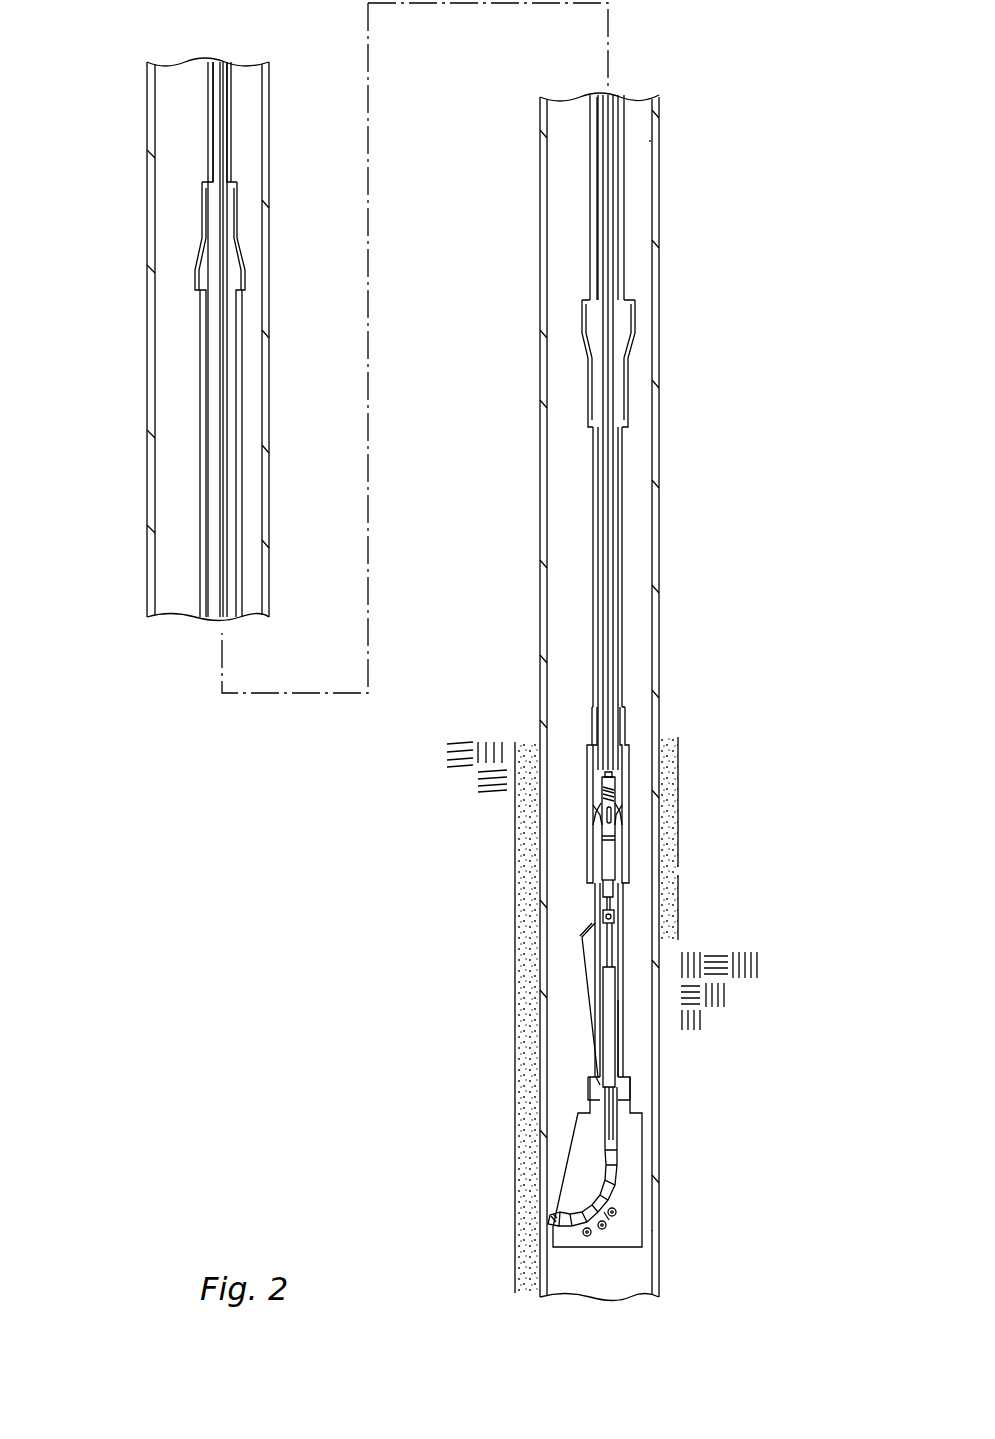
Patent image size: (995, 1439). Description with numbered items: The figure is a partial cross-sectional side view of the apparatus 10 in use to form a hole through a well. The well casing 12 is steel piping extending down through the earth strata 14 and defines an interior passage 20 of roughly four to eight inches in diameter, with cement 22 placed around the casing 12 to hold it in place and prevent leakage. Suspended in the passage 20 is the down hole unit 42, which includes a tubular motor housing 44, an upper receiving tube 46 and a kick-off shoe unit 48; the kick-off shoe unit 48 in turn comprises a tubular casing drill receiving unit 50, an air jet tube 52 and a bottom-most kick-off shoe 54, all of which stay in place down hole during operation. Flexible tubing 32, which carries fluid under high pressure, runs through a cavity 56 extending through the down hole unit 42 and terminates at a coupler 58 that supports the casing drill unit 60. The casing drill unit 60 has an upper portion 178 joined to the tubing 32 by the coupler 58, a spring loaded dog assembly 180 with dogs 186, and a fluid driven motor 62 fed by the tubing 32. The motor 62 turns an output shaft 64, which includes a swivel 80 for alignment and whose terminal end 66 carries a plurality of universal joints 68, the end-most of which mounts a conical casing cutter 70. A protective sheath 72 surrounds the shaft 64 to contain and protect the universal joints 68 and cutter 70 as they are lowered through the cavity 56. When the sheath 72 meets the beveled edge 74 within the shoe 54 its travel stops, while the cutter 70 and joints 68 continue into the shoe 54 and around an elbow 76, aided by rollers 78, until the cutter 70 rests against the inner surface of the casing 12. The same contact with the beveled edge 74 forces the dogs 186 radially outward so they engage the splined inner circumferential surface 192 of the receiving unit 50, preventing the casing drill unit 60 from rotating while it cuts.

The apparatus 10 is at (756, 1233).
The well casing 12 is at (662, 486).
The earth strata 14 is at (745, 943).
The interior passage 20 is at (640, 150).
The cement 22 is at (670, 753).
The flexible tubing 32 is at (230, 78).
The down hole unit 42 is at (198, 344).
The tubular motor housing 44 is at (623, 235).
The upper receiving tube 46 is at (637, 325).
The kick-off shoe unit 48 is at (626, 722).
The tubular casing drill receiving unit 50 is at (616, 850).
The air jet tube 52 is at (595, 897).
The kick-off shoe 54 is at (573, 1118).
The cavity 56 is at (218, 66).
The coupler 58 is at (478, 762).
The casing drill unit 60 is at (620, 778).
The fluid driven motor 62 is at (600, 843).
The output shaft 64 is at (604, 958).
The terminal end 66 is at (605, 1140).
The universal joints 68 is at (580, 1192).
The casing cutter 70 is at (550, 1228).
The protective sheath 72 is at (621, 1050).
The beveled edge 74 is at (598, 1082).
The elbow 76 is at (606, 1222).
The rollers 78 is at (615, 1215).
The swivel 80 is at (615, 917).
The upper portion 178 is at (597, 785).
The spring loaded dog assembly 180 is at (622, 826).
The dogs 186 is at (597, 805).
The splined inner circumferential surface 192 is at (617, 870).